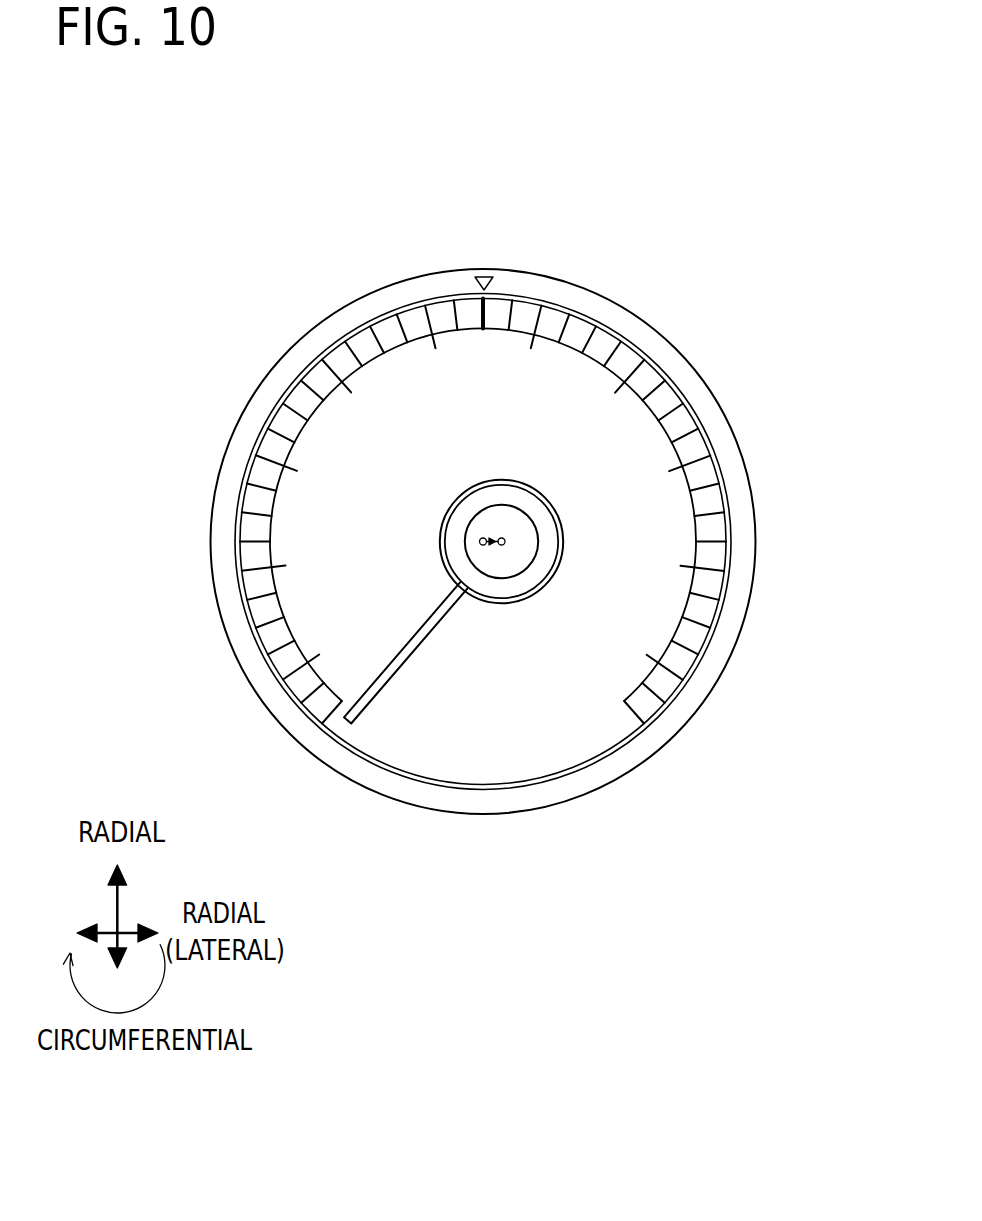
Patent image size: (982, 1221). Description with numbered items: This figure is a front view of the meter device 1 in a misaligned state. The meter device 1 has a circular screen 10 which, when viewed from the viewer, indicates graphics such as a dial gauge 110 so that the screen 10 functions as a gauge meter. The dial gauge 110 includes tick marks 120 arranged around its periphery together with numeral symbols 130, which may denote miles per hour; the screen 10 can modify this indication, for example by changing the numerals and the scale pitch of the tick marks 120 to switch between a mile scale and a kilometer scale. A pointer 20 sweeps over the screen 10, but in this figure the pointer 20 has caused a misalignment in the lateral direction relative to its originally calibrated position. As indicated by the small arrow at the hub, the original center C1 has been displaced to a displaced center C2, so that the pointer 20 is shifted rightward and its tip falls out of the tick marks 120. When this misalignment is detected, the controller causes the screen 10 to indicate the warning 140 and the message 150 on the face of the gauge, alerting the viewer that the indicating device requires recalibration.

The meter device 1 is at (704, 291).
The screen 10 is at (565, 748).
The pointer 20 is at (492, 472).
The dial gauge 110 is at (283, 378).
The tick marks 120 is at (263, 492).
The numeral symbols 130 is at (292, 578).
The warning 140 is at (567, 697).
The message 150 is at (528, 742).
The original center C1 is at (483, 545).
The displaced center C2 is at (502, 545).